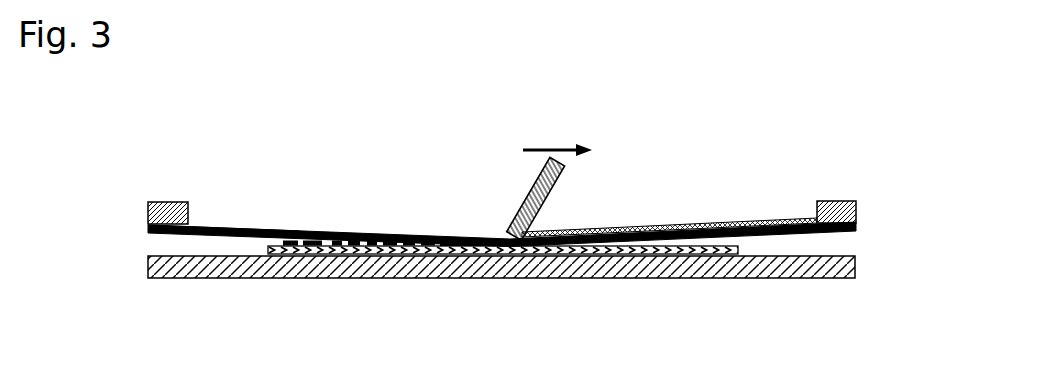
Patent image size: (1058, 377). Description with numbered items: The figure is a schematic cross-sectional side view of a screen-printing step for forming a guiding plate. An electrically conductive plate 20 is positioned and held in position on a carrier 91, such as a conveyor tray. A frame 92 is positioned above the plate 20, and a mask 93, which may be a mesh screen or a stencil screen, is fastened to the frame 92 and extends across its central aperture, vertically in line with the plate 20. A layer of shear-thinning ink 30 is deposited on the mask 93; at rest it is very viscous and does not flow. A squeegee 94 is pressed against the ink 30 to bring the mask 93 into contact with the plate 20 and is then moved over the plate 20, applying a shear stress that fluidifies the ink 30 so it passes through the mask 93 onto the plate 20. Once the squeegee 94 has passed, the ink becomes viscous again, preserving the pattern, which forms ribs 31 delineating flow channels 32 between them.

The electrically conductive plate 20 is at (738, 250).
The ink 30 is at (673, 228).
The ribs 31 is at (277, 243).
The flow channels 32 is at (313, 238).
The carrier 91 is at (502, 278).
The frame 92 is at (857, 213).
The mask 93 is at (237, 225).
The squeegee 94 is at (540, 205).